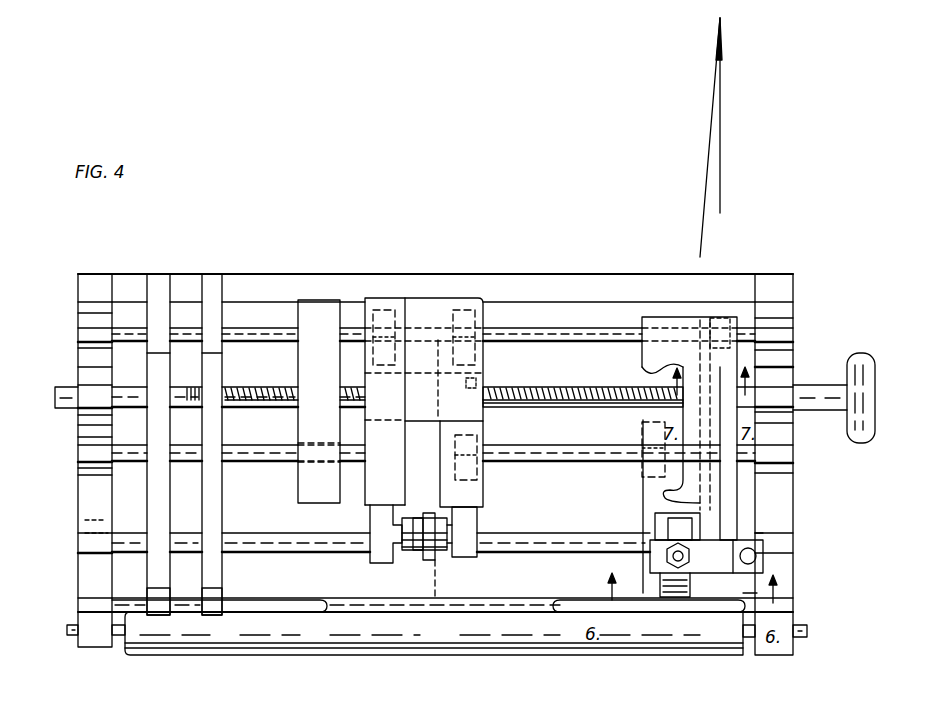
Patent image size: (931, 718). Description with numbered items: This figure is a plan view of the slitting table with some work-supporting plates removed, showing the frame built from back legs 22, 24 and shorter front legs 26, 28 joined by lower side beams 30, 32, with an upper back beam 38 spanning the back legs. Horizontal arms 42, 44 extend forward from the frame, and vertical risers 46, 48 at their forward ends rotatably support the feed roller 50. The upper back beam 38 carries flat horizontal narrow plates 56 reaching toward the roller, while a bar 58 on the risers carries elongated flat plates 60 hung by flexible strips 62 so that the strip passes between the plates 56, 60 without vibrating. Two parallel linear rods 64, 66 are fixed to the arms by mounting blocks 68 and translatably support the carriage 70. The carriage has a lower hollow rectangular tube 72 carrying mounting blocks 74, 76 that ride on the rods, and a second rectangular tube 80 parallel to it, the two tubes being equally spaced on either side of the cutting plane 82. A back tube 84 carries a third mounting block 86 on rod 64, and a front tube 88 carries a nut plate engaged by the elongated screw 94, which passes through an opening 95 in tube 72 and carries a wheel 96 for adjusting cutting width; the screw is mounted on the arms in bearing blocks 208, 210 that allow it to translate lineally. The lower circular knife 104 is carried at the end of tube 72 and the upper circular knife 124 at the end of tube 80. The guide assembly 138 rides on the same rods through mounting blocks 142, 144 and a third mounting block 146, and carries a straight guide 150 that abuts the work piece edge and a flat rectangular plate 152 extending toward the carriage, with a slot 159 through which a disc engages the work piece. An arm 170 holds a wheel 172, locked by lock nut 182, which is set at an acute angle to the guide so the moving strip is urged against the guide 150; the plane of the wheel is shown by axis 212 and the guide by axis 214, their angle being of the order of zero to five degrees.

The back leg 22 is at (778, 300).
The back leg 24 is at (93, 286).
The front leg 26 is at (765, 556).
The front leg 28 is at (80, 540).
The lower side beam 30 is at (770, 510).
The lower side beam 32 is at (100, 510).
The upper back beam 38 is at (178, 290).
The horizontal arm 42 is at (785, 580).
The horizontal arm 44 is at (90, 492).
The vertical riser 46 is at (780, 650).
The vertical riser 48 is at (100, 645).
The horizontal roller 50 is at (285, 630).
The flat horizontal narrow plates 56 is at (152, 290).
The bar 58 is at (268, 600).
The elongated flat plates 60 is at (158, 507).
The flexible strips 62 is at (160, 600).
The linear rod 64 is at (582, 330).
The linear rod 66 is at (570, 456).
The mounting blocks 68 is at (90, 330).
The carriage 70 is at (435, 300).
The lower hollow rectangular tube 72 is at (300, 430).
The mounting block 74 is at (465, 315).
The mounting block 76 is at (485, 440).
The second hollow rectangular tube 80 is at (368, 497).
The cutting plane 82 is at (432, 575).
The back tube 84 is at (385, 305).
The third mounting block 86 is at (365, 350).
The front tube 88 is at (421, 432).
The screw 94 is at (598, 390).
The opening 95 is at (478, 385).
The wheel 96 is at (852, 425).
The lower circular knife 104 is at (455, 532).
The upper circular knife 124 is at (417, 556).
The guide assembly 138 is at (690, 490).
The mounting block 142 is at (760, 475).
The mounting block 144 is at (718, 300).
The third mounting block 146 is at (640, 440).
The guide 150 is at (735, 520).
The flat rectangular plate 152 is at (650, 330).
The slot 159 is at (702, 503).
The arm 170 is at (710, 570).
The wheel 172 is at (660, 524).
The lock nut 182 is at (668, 560).
The bearing block 208 is at (92, 382).
The bearing block 210 is at (780, 385).
The axis 212 is at (707, 162).
The axis 214 is at (724, 192).